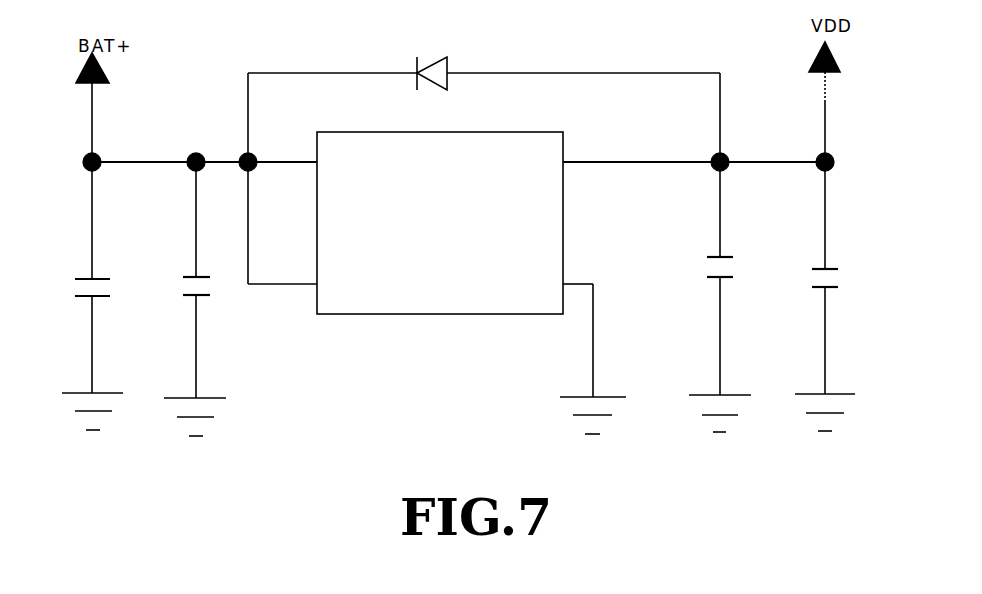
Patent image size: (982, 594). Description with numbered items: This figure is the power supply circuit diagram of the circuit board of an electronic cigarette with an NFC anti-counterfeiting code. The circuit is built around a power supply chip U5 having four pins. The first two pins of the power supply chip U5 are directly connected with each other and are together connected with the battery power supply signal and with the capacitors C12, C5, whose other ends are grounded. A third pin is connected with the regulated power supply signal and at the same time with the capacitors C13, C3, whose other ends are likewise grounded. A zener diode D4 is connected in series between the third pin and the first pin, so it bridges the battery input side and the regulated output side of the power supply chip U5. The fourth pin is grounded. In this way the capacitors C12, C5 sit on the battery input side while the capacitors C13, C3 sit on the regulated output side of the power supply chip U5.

The zener diode D4 is at (484, 93).
The power supply chip U5 is at (437, 283).
The capacitor C12 is at (81, 296).
The capacitor C5 is at (186, 299).
The capacitor C3 is at (710, 297).
The capacitor C13 is at (812, 296).